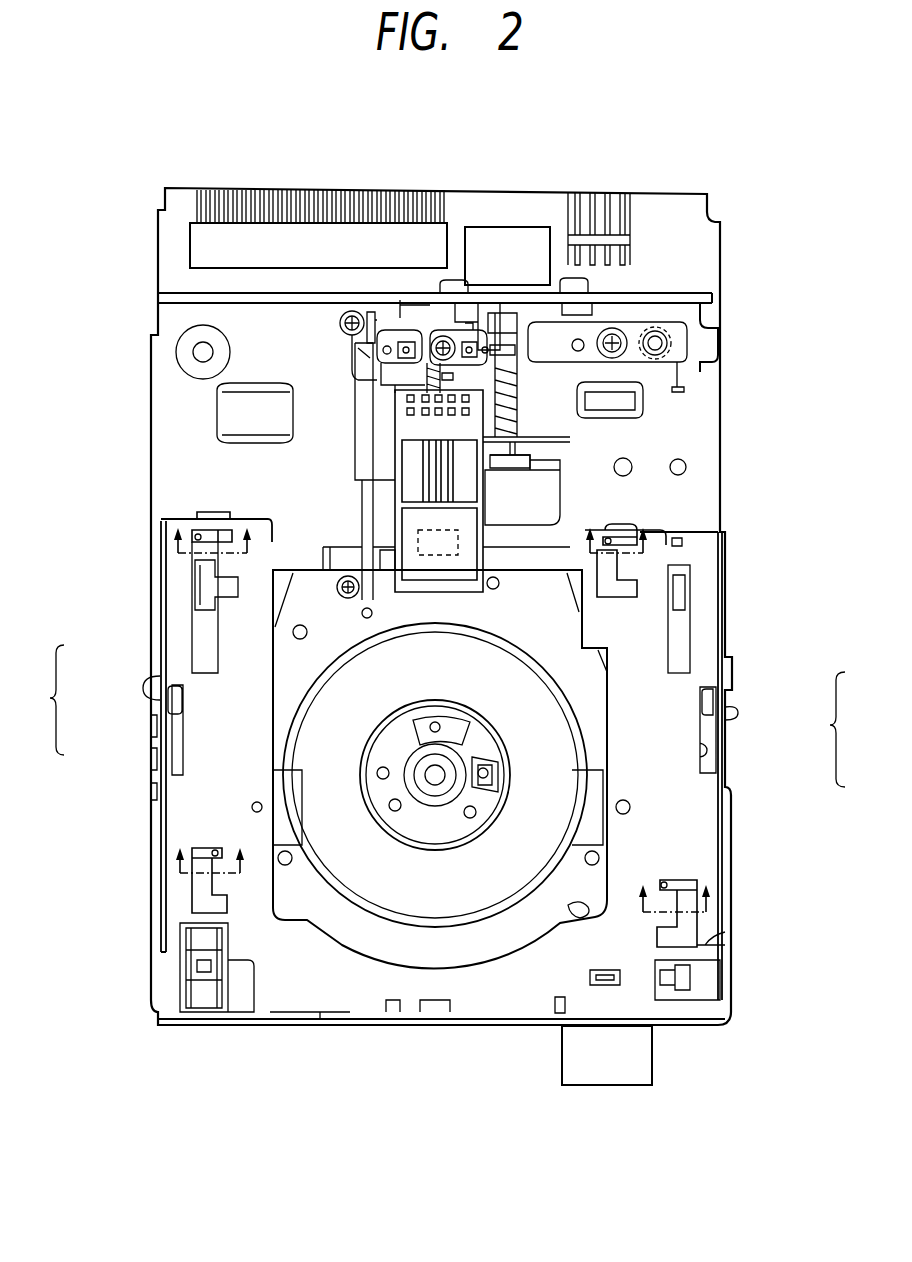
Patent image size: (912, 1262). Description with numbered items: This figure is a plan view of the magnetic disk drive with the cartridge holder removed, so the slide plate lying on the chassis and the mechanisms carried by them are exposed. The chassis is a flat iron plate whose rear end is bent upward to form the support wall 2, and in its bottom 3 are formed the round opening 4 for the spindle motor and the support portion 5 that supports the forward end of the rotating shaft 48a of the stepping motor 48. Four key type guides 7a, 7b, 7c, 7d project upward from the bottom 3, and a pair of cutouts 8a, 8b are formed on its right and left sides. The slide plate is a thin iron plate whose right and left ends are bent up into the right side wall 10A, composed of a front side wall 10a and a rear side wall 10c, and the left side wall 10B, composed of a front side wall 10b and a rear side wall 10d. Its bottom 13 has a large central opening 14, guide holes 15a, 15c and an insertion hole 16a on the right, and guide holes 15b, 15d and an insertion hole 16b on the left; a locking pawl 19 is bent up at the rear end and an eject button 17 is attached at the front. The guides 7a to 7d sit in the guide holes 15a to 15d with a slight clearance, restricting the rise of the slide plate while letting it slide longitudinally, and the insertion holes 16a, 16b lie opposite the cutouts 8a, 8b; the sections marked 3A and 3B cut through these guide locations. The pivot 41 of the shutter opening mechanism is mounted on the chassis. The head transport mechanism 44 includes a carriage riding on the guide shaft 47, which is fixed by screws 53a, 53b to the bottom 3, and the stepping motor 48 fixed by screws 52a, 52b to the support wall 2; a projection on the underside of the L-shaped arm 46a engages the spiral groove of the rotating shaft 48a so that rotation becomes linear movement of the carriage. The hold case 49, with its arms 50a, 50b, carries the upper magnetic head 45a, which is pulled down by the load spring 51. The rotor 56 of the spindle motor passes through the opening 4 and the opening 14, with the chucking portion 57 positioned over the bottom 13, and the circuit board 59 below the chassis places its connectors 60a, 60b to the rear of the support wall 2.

The support wall 2 is at (193, 293).
The bottom 3 is at (151, 390).
The section line 3A is at (647, 535).
The section line 3B is at (172, 532).
The round opening 4 is at (520, 895).
The support portion 5 is at (506, 468).
The key type guide 7a is at (668, 880).
The key type guide 7b is at (216, 848).
The key type guide 7c is at (602, 537).
The key type guide 7d is at (225, 530).
The cutout 8a is at (700, 722).
The cutout 8b is at (156, 678).
The front side wall 10a is at (733, 872).
The front side wall 10b is at (158, 850).
The rear side wall 10c is at (728, 620).
The rear side wall 10d is at (165, 598).
The right side wall 10A is at (766, 766).
The left side wall 10B is at (141, 735).
The bottom 13 is at (283, 995).
The opening 14 is at (453, 965).
The guide hole 15a is at (697, 935).
The guide hole 15b is at (200, 905).
The guide hole 15c is at (690, 600).
The guide hole 15d is at (193, 645).
The insertion hole 16a is at (700, 745).
The insertion hole 16b is at (176, 740).
The eject button 17 is at (653, 1068).
The locking pawl 19 is at (684, 540).
The pivot 41 is at (634, 465).
The head transport mechanism 44 is at (390, 313).
The upper magnetic head 45a is at (440, 557).
The L-shaped arm 46a is at (690, 343).
The guide shaft 47 is at (383, 525).
The stepping motor 48 is at (515, 227).
The rotating shaft 48a is at (690, 390).
The hold case 49 is at (387, 503).
The arm 50a is at (688, 468).
The arm 50b is at (395, 420).
The load spring 51 is at (410, 313).
The screw 52a is at (588, 280).
The screw 52b is at (457, 292).
The screw 53a is at (348, 598).
The screw 53b is at (345, 312).
The rotor 56 is at (388, 890).
The chucking portion 57 is at (437, 823).
The circuit board 59 is at (683, 200).
The connector 60a is at (630, 243).
The connector 60b is at (190, 243).